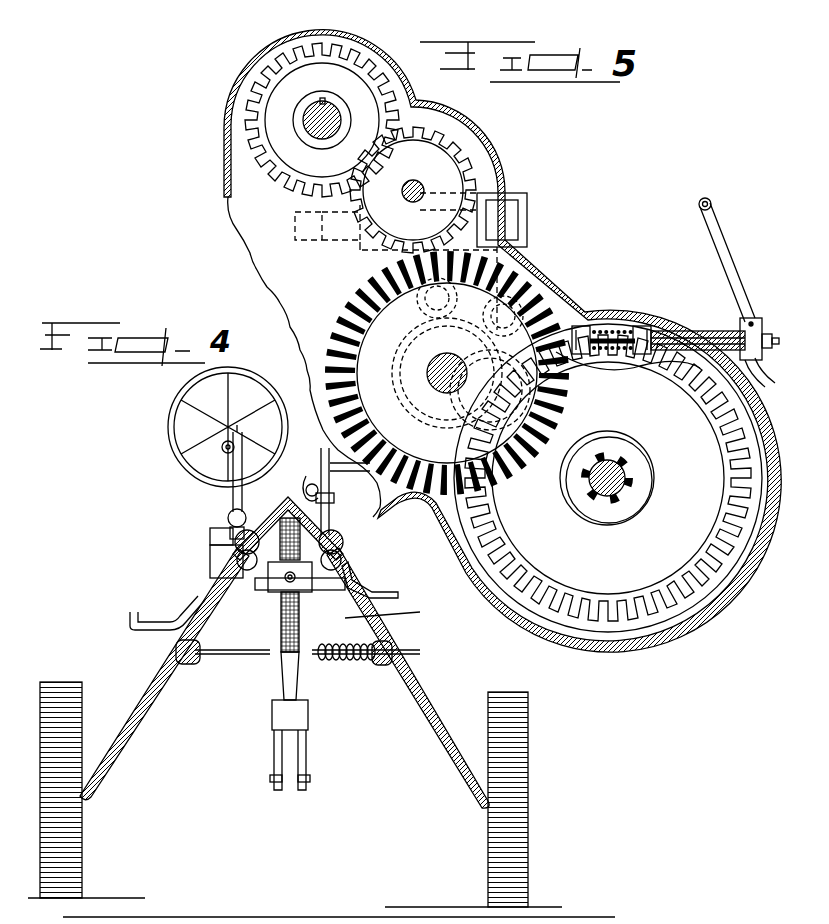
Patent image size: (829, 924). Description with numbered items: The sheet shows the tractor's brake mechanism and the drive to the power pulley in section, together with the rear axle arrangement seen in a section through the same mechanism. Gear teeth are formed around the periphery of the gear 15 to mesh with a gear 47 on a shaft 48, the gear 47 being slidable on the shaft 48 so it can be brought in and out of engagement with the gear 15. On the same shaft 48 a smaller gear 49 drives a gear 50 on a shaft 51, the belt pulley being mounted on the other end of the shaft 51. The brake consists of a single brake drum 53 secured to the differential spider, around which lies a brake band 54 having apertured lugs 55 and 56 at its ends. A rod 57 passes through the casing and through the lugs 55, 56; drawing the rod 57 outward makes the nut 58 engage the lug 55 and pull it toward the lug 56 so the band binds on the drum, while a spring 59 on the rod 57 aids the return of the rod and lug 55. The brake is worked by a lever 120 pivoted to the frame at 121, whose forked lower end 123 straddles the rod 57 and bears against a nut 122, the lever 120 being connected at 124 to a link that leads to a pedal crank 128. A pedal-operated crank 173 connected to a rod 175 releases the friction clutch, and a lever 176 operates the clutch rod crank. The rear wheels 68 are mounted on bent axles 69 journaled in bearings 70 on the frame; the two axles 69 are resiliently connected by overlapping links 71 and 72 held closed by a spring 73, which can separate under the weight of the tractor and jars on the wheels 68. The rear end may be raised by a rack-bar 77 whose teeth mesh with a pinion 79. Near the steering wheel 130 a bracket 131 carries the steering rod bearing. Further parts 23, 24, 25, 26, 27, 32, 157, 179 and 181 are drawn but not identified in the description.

In FIG. 5, the gear 15 is at (353, 302).
In FIG. 5, the brush wheel 23 is at (400, 356).
In FIG. 5, the bearing bracket 24 is at (498, 268).
In FIG. 5, the bearing block 25 is at (520, 288).
In FIG. 5, the ring gear 26 is at (617, 575).
In FIG. 5, the casing 27 is at (635, 612).
In FIG. 5, the hub shaft 32 is at (622, 480).
In FIG. 5, the gear 47 is at (468, 178).
In FIG. 5, the shaft 48 is at (417, 182).
In FIG. 5, the gear 49 is at (440, 172).
In FIG. 5, the gear 50 is at (338, 96).
In FIG. 5, the shaft 51 is at (343, 118).
In FIG. 5, the brake drum 53 is at (626, 338).
In FIG. 5, the brake band 54 is at (610, 348).
In FIG. 5, the lug 55 is at (584, 345).
In FIG. 5, the lug 56 is at (640, 348).
In FIG. 5, the rod 57 is at (692, 335).
In FIG. 5, the nut 58 is at (576, 328).
In FIG. 5, the spring 59 is at (622, 342).
In FIG. 4, the rear wheels 68 is at (62, 835).
In FIG. 4, the bent axles 69 is at (132, 730).
In FIG. 4, the bearings 70 is at (240, 552).
In FIG. 4, the link 71 is at (228, 658).
In FIG. 4, the link 72 is at (374, 668).
In FIG. 4, the spring 73 is at (318, 668).
In FIG. 4, the rack-bar 77 is at (280, 606).
In FIG. 4, the pinion 79 is at (278, 522).
In FIG. 5, the brake lever 120 is at (728, 256).
In FIG. 5, the pivot 121 is at (755, 322).
In FIG. 5, the nut 122 is at (769, 345).
In FIG. 5, the forked lower end 123 is at (750, 362).
In FIG. 5, the connection point 124 is at (712, 205).
In FIG. 4, the pedal crank 128 is at (150, 614).
In FIG. 4, the steering wheel 130 is at (178, 440).
In FIG. 4, the bracket 131 is at (233, 496).
In FIG. 5, the bracket 157 is at (300, 234).
In FIG. 4, the pedal-operated crank 173 is at (378, 598).
In FIG. 4, the rod 175 is at (188, 658).
In FIG. 4, the lever 176 is at (345, 624).
In FIG. 4, the bracket 179 is at (313, 482).
In FIG. 4, the rod 181 is at (331, 492).